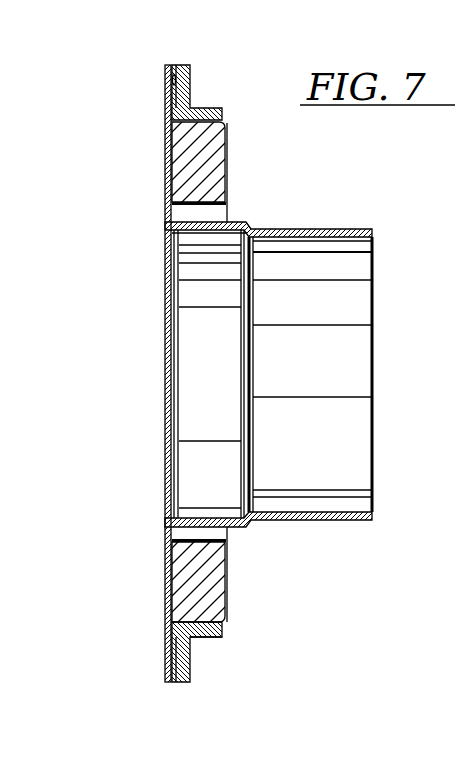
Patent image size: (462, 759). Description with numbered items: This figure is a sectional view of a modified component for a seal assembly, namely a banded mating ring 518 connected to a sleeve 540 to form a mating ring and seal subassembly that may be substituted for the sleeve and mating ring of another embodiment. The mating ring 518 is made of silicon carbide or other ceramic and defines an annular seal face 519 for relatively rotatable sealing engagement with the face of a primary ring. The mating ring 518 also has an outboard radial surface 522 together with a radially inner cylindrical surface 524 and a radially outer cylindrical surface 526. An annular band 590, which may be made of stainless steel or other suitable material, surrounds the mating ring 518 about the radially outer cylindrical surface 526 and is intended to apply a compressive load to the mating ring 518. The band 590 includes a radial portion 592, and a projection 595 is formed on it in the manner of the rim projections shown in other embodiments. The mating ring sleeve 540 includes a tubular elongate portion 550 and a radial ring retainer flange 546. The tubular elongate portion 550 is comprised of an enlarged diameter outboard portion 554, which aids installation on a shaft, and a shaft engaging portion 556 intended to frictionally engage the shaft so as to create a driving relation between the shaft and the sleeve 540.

The radial ring retainer flange 546 is at (165, 148).
The projection 595 is at (175, 72).
The annular band 590 is at (193, 88).
The banded mating ring 518 is at (207, 150).
The annular seal face 519 is at (228, 170).
The tubular elongate portion 550 is at (352, 229).
The sleeve 540 is at (327, 521).
The shaft engaging portion 556 is at (332, 513).
The enlarged diameter outboard portion 554 is at (200, 510).
The radially inner cylindrical surface 524 is at (228, 534).
The outboard radial surface 522 is at (165, 585).
The radial portion 592 is at (183, 683).
The radially outer cylindrical surface 526 is at (207, 642).